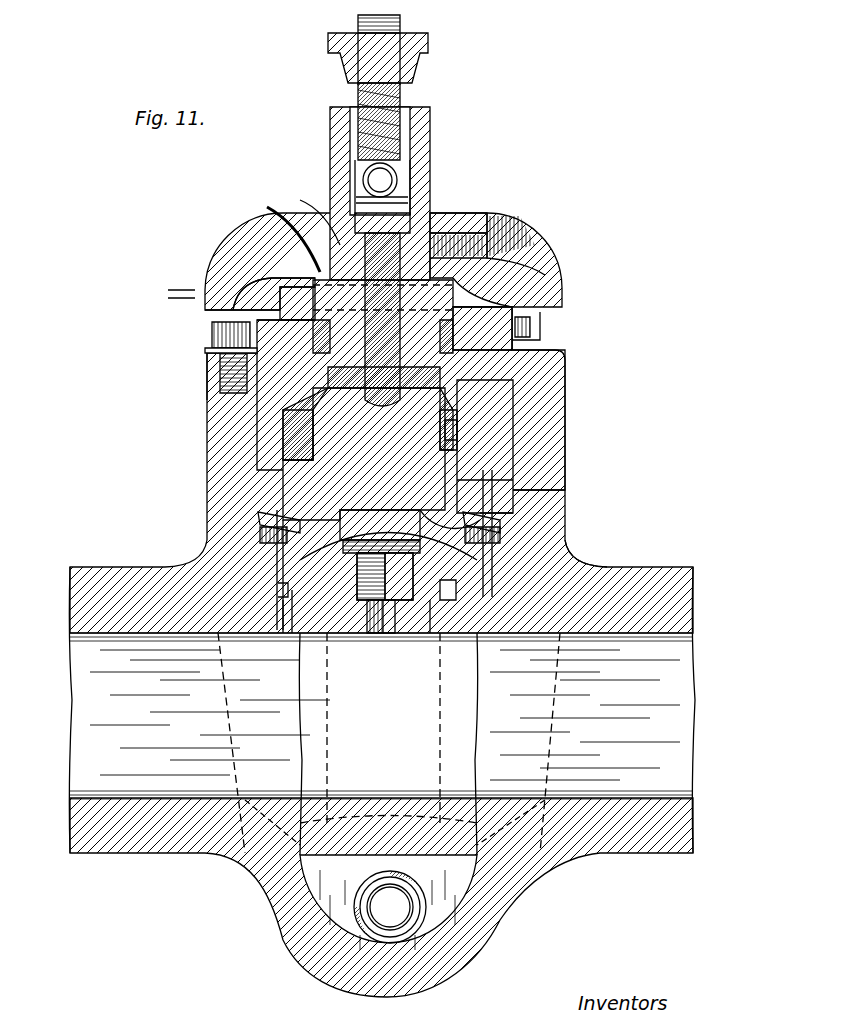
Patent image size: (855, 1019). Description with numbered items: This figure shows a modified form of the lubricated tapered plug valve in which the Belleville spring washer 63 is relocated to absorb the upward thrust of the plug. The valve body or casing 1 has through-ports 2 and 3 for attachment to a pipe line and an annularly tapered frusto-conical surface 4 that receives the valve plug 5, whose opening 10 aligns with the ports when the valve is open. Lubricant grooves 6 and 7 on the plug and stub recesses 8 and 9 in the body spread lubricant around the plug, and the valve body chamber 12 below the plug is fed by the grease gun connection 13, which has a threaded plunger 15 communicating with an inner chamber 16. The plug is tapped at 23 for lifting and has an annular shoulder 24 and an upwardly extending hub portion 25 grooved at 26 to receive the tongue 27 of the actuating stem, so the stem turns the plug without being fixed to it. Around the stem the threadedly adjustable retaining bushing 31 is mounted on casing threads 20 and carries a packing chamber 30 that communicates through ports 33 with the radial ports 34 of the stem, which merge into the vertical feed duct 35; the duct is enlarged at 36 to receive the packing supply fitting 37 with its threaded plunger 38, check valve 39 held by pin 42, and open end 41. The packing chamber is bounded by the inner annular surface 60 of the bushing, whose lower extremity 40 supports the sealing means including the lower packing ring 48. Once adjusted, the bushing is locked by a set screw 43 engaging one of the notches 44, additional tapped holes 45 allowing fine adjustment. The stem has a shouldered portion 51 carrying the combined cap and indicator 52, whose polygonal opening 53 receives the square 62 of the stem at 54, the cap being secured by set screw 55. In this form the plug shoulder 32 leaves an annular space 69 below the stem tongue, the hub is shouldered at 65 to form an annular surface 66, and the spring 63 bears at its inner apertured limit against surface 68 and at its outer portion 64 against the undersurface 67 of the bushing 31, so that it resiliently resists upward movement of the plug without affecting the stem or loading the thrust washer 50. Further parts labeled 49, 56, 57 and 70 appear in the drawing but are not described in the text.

The valve body or casing 1 is at (628, 566).
The through-port 2 is at (690, 686).
The through-port 3 is at (72, 680).
The frusto-conical surface 4 is at (475, 636).
The valve plug 5 is at (275, 620).
The lubricant groove 6 is at (320, 712).
The lubricant groove 7 is at (460, 740).
The stub recess 8 is at (296, 633).
The stub recess 9 is at (440, 605).
The plug opening 10 is at (326, 752).
The valve body chamber 12 is at (325, 925).
The grease gun connection 13 is at (405, 883).
The threaded plunger 15 is at (378, 902).
The inner chamber 16 is at (383, 920).
The casing threads 20 is at (530, 370).
The tapped opening 23 is at (378, 612).
The plug annular shoulder 24 is at (568, 547).
The annular hub portion 25 is at (277, 560).
The slot or groove 26 is at (398, 540).
The tongue 27 is at (345, 322).
The packing chamber 30 is at (515, 420).
The adjustable retaining bushing 31 is at (515, 445).
The plug shoulder 32 is at (380, 550).
The inwardly extending ports 33 is at (288, 425).
The radially extending ports 34 is at (332, 340).
The feed duct 35 is at (400, 348).
The enlarged duct portion 36 is at (366, 176).
The packing feed fitting 37 is at (412, 98).
The threaded plunger 38 is at (402, 28).
The check valve 39 is at (398, 180).
The lower extremity of annular surface 40 is at (330, 440).
The open end portion 41 is at (412, 218).
The transverse pin 42 is at (352, 200).
The set screw 43 is at (212, 330).
The notches 44 is at (212, 320).
The tapped holes 45 is at (220, 376).
The lower packing ring 48 is at (445, 426).
The cap 49 is at (478, 270).
The thrust washer 50 is at (260, 474).
The shouldered portion 51 is at (282, 215).
The combined cap and indicator 52 is at (222, 240).
The polygonal opening 53 is at (322, 215).
The stem square engagement 54 is at (468, 213).
The set screw 55 is at (478, 240).
The packing 56 is at (456, 345).
The washer 57 is at (205, 350).
The inner annular surface 60 is at (455, 370).
The stem square 62 is at (432, 128).
The Belleville spring washer 63 is at (503, 520).
The outer portion of washer 64 is at (530, 490).
The hub shoulder 65 is at (503, 537).
The annular surface 66 is at (260, 538).
The bushing undersurface 67 is at (258, 515).
The annular surface 68 is at (465, 510).
The annular space 69 is at (352, 560).
The gland nut 70 is at (280, 298).